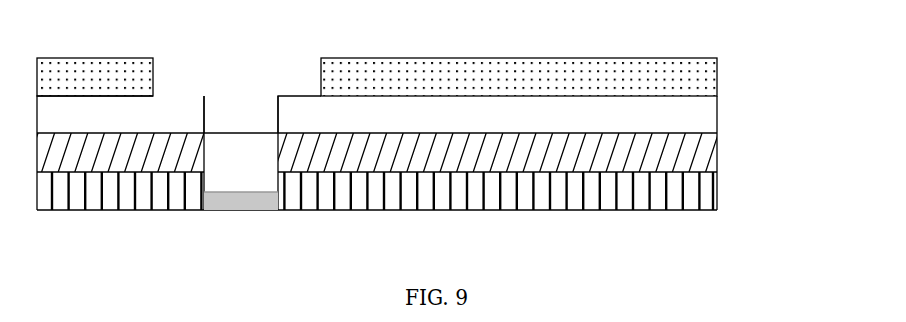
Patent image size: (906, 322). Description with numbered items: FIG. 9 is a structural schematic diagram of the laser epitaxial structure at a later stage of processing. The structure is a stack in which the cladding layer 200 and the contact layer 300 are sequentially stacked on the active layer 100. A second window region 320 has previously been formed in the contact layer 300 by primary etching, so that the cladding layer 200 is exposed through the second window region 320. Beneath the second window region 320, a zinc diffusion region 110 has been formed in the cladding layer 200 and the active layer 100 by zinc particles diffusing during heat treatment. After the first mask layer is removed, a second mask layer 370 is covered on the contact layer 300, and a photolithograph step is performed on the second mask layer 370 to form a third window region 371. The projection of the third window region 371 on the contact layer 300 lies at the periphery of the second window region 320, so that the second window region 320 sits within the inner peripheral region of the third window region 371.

The active layer 100 is at (713, 212).
The zinc diffusion region 110 is at (263, 205).
The cladding layer 200 is at (717, 173).
The contact layer 300 is at (717, 135).
The second window region 320 is at (247, 95).
The second mask layer 370 is at (717, 97).
The third window region 371 is at (305, 62).